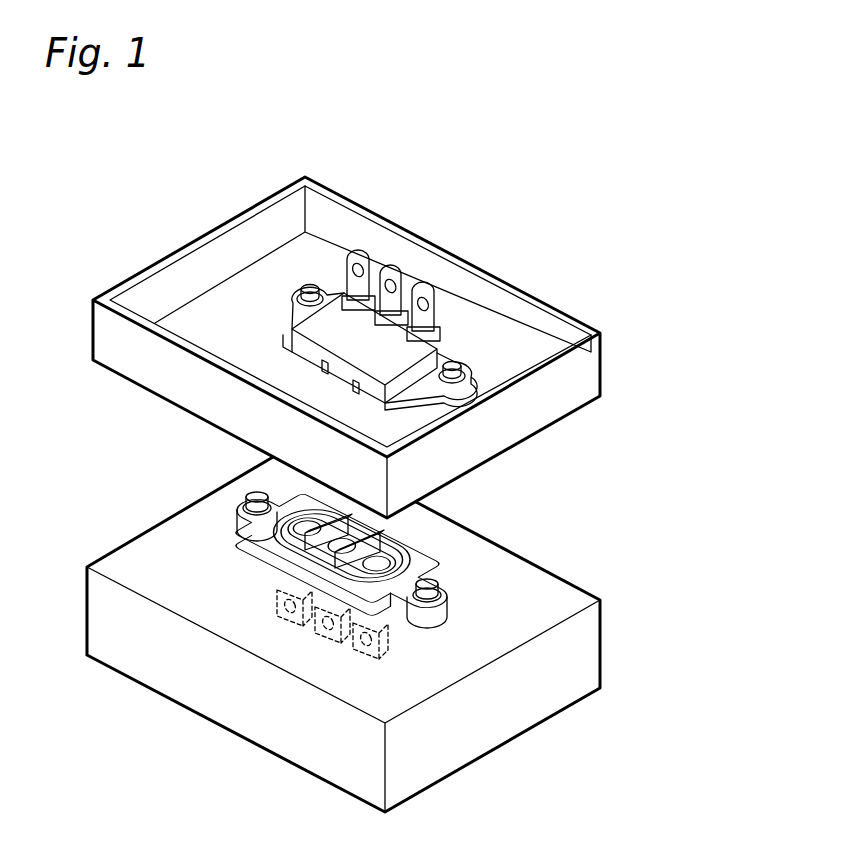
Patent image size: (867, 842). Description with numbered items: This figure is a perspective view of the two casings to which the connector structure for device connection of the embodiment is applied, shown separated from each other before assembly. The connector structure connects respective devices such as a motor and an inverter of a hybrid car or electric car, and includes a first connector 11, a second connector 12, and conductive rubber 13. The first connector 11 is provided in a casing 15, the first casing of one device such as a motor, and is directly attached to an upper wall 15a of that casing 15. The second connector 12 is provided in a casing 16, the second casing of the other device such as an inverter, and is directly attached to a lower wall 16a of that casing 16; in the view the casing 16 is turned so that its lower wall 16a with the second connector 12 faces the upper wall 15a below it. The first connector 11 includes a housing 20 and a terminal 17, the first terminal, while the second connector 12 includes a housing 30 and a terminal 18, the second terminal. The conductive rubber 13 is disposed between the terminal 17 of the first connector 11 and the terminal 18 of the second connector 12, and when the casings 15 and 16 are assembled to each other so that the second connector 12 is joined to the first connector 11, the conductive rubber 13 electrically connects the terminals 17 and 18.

The first connector 11 is at (394, 634).
The second connector 12 is at (465, 335).
The conductive rubber 13 is at (300, 546).
The casing 15 is at (603, 633).
The upper wall 15a is at (548, 592).
The casing 16 is at (602, 360).
The lower wall 16a is at (230, 305).
The terminal 17 is at (363, 659).
The terminal 18 is at (422, 284).
The housing 20 is at (427, 547).
The housing 30 is at (310, 360).